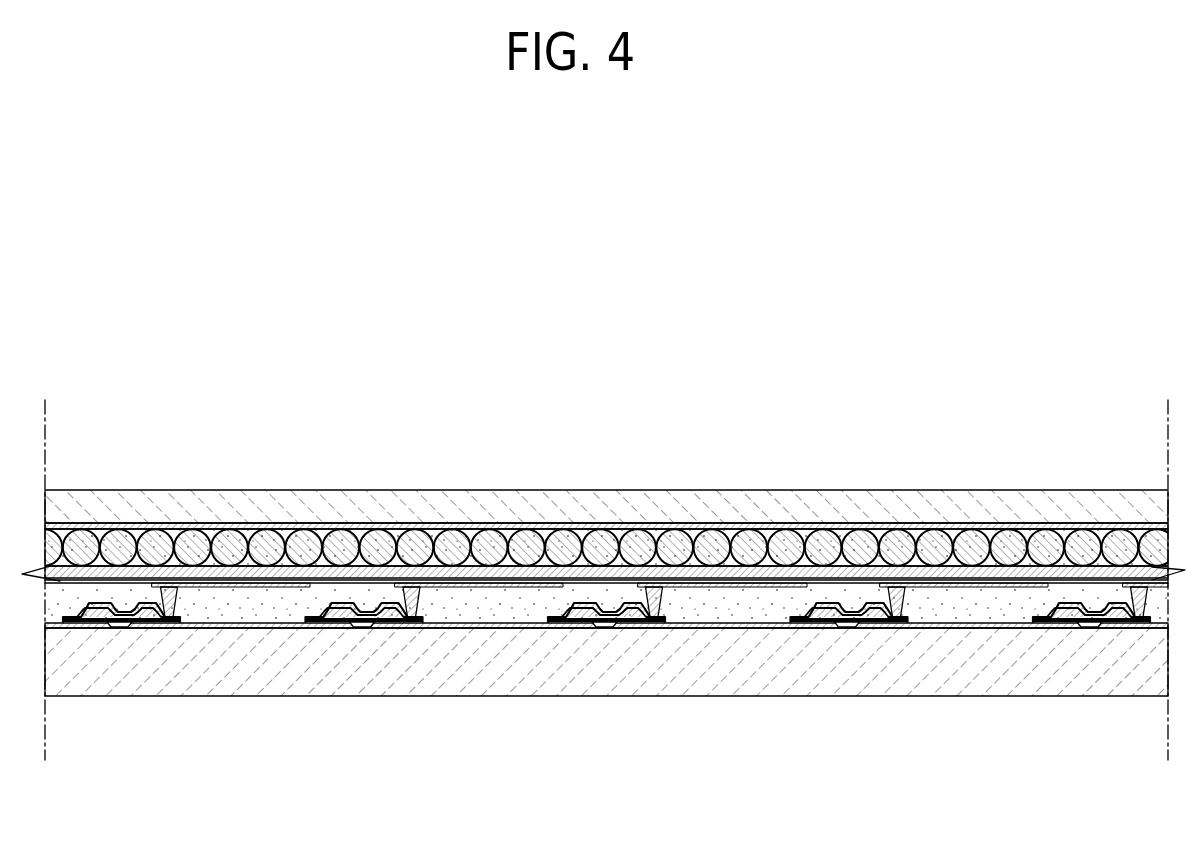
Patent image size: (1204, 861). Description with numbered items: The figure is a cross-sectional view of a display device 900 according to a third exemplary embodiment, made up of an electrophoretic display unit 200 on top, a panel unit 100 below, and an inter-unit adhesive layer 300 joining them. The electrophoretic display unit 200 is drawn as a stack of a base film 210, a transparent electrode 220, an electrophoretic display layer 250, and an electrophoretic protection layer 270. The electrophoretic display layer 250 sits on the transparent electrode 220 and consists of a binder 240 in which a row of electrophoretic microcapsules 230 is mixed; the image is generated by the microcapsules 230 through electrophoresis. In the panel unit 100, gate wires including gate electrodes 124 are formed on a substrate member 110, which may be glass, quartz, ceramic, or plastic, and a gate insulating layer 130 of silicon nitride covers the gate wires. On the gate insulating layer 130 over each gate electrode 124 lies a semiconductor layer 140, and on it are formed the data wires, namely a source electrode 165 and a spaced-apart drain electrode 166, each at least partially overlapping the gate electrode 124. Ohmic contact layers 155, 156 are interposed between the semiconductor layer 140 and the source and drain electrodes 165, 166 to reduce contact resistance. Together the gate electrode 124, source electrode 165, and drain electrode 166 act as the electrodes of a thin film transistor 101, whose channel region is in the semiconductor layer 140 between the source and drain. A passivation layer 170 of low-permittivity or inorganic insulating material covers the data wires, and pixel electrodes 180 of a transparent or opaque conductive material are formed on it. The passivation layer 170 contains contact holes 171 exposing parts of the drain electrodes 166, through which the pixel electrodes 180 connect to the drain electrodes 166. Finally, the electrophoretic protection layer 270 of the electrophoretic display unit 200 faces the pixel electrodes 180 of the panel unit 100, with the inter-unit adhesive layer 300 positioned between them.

The display device 900 is at (588, 316).
The electrophoretic display unit 200 is at (603, 468).
The base film 210 is at (283, 502).
The transparent electrode 220 is at (353, 527).
The electrophoretic display layer 250 is at (601, 461).
The electrophoretic microcapsule 230 is at (457, 545).
The binder 240 is at (505, 533).
The electrophoretic protection layer 270 is at (623, 575).
The inter-unit adhesive layer 300 is at (833, 580).
The contact hole 171 is at (897, 592).
The passivation layer 170 is at (1015, 608).
The pixel electrode 180 is at (968, 590).
The panel unit 100 is at (606, 618).
The substrate member 110 is at (308, 688).
The gate insulating layer 130 is at (418, 628).
The thin film transistor 101 is at (606, 716).
The source electrode 165 is at (557, 622).
The ohmic contact layer 155 is at (582, 622).
The semiconductor layer 140 is at (597, 627).
The gate electrode 124 is at (608, 622).
The ohmic contact layer 156 is at (643, 622).
The drain electrode 166 is at (667, 622).